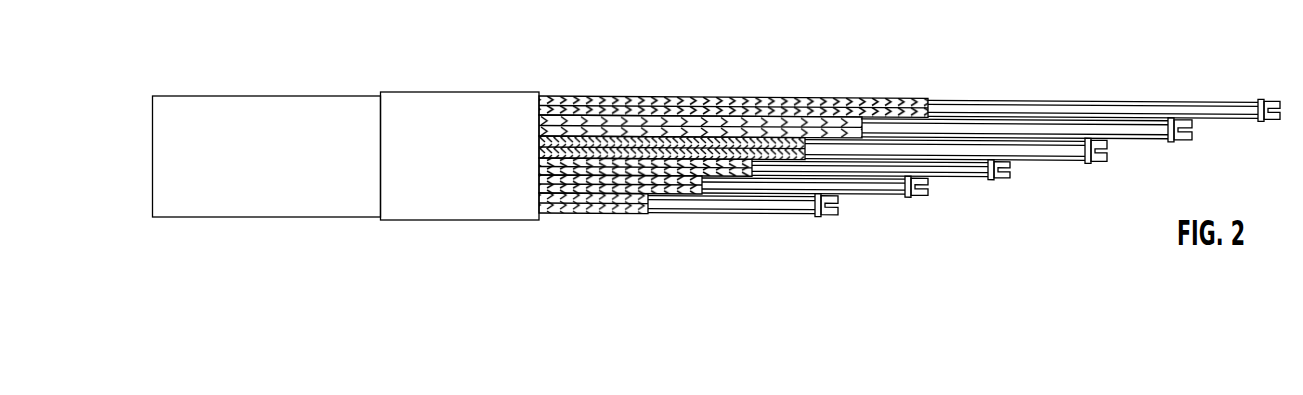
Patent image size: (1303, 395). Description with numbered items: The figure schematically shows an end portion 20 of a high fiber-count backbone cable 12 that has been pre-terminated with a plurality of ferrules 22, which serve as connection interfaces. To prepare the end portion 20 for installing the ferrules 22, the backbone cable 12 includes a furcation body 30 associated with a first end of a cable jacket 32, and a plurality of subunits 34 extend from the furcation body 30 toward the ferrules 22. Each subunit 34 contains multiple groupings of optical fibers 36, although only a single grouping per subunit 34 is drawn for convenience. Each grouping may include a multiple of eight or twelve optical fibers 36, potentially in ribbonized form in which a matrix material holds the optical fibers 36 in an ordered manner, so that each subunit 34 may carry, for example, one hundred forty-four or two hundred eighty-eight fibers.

The backbone cable 12 is at (831, 144).
The end portion 20 is at (267, 154).
The ferrules 22 is at (835, 216).
The furcation body 30 is at (412, 207).
The cable jacket 32 is at (290, 205).
The subunits 34 is at (622, 210).
The optical fibers 36 is at (708, 211).